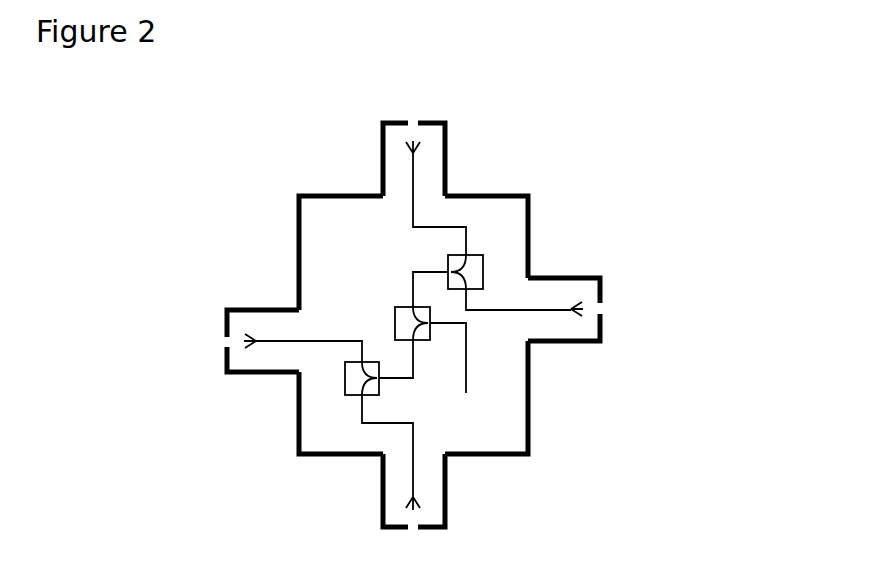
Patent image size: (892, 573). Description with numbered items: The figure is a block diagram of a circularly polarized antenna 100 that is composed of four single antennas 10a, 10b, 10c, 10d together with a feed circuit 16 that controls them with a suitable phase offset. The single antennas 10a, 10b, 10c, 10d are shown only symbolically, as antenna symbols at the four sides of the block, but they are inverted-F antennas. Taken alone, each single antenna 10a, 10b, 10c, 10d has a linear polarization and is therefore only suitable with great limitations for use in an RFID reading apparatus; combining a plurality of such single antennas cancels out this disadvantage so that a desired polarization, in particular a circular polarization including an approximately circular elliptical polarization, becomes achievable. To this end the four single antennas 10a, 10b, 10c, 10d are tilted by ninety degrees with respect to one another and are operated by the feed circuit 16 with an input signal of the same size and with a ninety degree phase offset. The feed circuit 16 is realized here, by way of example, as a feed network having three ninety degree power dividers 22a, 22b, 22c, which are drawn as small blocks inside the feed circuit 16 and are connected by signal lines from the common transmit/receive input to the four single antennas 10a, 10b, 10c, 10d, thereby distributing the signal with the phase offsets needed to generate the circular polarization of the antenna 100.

The circularly polarized antenna 100 is at (665, 122).
The feed circuit 16 is at (357, 250).
The single antenna 10a is at (383, 152).
The single antenna 10b is at (572, 287).
The single antenna 10c is at (438, 483).
The single antenna 10d is at (258, 352).
The 90° power divider 22a is at (480, 256).
The 90° power divider 22b is at (395, 318).
The 90° power divider 22c is at (342, 395).